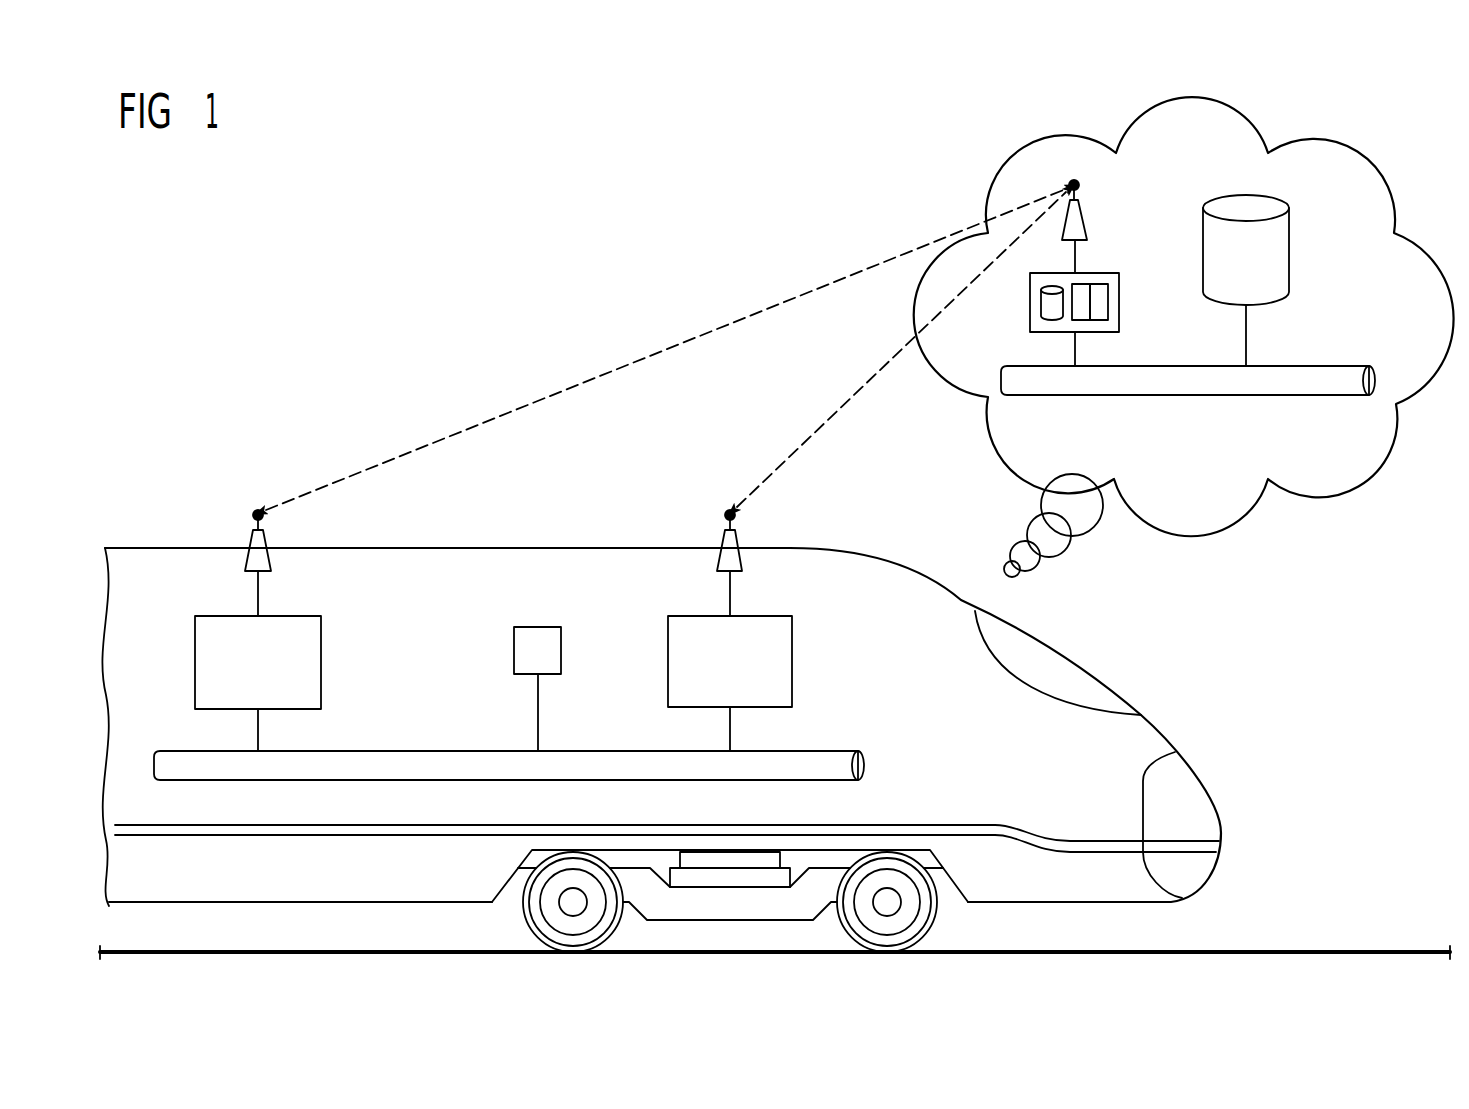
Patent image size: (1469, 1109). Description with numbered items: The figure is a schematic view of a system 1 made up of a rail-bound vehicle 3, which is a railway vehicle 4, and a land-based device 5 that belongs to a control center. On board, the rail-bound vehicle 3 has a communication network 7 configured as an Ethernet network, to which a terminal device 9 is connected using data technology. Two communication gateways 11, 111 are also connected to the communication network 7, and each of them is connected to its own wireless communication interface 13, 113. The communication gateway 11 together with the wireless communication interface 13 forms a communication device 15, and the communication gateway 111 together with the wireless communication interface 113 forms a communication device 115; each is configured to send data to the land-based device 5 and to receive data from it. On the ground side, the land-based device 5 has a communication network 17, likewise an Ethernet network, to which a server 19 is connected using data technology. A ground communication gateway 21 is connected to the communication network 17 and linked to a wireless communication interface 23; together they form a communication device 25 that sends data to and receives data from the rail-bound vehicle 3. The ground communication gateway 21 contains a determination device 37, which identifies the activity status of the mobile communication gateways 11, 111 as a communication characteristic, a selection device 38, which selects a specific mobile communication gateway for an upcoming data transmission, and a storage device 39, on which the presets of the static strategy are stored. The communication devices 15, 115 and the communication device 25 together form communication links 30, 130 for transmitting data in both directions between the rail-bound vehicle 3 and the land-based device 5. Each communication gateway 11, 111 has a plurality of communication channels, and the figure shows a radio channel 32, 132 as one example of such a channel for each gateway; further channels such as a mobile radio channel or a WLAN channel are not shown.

The system 1 is at (430, 367).
The rail-bound vehicle 3 is at (1172, 712).
The railway vehicle 4 is at (730, 901).
The land-based device 5 is at (1382, 140).
The communication network 7 is at (458, 749).
The terminal device 9 is at (514, 650).
The communication gateway 11 is at (321, 656).
The wireless communication interface 13 is at (244, 539).
The communication device 15 is at (290, 534).
The communication network 17 is at (1167, 398).
The server 19 is at (1289, 263).
The ground communication gateway 21 is at (1125, 278).
The wireless communication interface 23 is at (1085, 207).
The communication device 25 is at (1112, 205).
The communication link 30 is at (603, 359).
The radio channel 32 is at (422, 447).
The determination device 37 is at (1083, 282).
The selection device 38 is at (1108, 305).
The storage device 39 is at (1039, 303).
The communication gateway 111 is at (792, 656).
The wireless communication interface 113 is at (716, 540).
The communication device 115 is at (770, 533).
The communication link 130 is at (850, 391).
The radio channel 132 is at (800, 447).